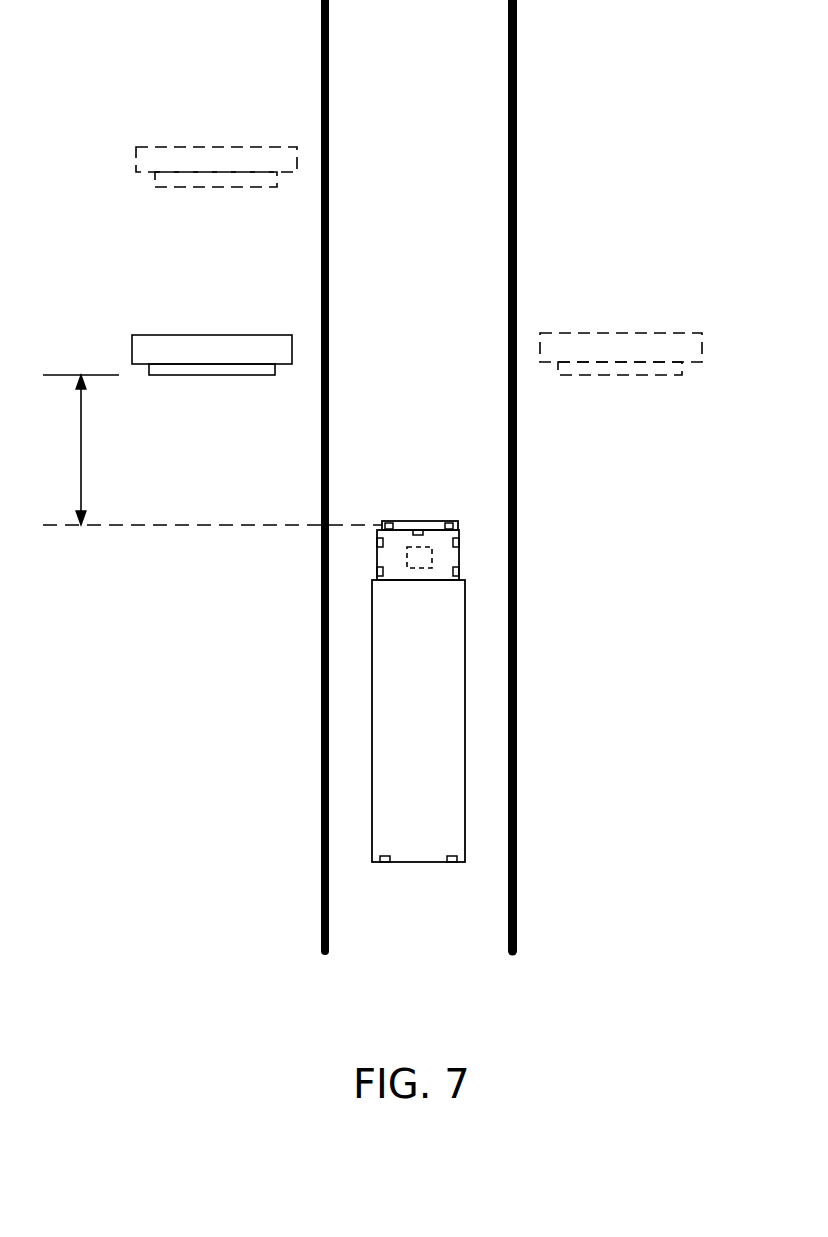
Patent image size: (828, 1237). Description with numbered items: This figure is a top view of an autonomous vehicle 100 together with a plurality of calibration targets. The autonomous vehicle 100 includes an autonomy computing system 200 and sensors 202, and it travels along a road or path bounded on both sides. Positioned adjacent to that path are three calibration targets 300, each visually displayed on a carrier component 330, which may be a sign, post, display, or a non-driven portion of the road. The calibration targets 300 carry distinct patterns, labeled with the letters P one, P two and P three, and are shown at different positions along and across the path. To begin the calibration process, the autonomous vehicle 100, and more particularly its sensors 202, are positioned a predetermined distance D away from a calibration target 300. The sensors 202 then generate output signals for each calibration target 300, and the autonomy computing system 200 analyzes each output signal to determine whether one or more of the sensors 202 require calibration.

The autonomous vehicle 100 is at (482, 706).
The autonomy computing system 200 is at (423, 555).
The sensors 202 is at (450, 522).
The calibration target 300 is at (174, 202).
The carrier component 330 is at (250, 149).
The predetermined distance D is at (212, 450).